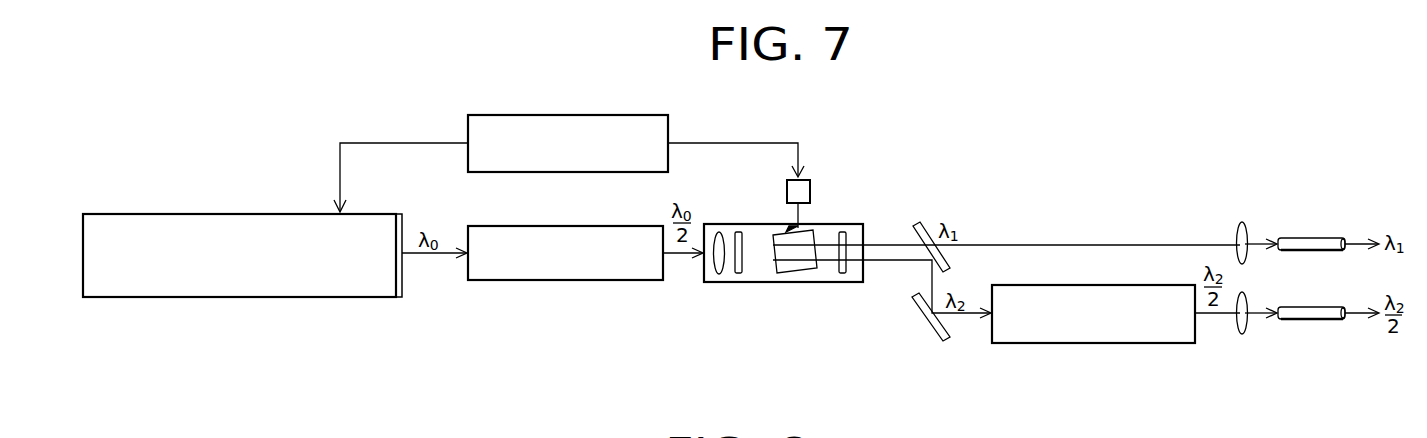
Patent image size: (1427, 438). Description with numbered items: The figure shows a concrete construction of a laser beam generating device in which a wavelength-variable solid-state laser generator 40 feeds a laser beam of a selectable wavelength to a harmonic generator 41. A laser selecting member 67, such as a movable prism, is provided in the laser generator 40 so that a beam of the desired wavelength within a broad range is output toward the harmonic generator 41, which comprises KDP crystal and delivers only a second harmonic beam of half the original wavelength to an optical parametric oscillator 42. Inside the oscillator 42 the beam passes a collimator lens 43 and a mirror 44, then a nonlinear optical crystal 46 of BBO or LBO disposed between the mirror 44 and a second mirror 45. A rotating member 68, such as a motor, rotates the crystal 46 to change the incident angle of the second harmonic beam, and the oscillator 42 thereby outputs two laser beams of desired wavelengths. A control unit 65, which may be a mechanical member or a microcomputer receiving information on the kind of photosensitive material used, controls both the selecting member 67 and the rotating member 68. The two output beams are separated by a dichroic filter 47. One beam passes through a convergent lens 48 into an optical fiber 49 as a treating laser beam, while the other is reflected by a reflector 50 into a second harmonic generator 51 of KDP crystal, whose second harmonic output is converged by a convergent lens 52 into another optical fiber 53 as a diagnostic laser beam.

The solid-state laser generator 40 is at (234, 213).
The first harmonic generator 41 is at (580, 226).
The optical parametric oscillator 42 is at (822, 223).
The collimator lens 43 is at (712, 264).
The mirror 44 is at (738, 275).
The mirror 45 is at (843, 230).
The nonlinear optical crystal 46 is at (793, 273).
The dichroic filter 47 is at (925, 223).
The convergent lens 48 is at (1240, 223).
The optical fiber 49 is at (1318, 238).
The reflector 50 is at (923, 318).
The second harmonic generator 51 is at (1052, 285).
The convergent lens 52 is at (1240, 335).
The optical fiber 53 is at (1315, 322).
The control unit 65 is at (568, 115).
The laser selecting member 67 is at (390, 298).
The rotating member 68 is at (810, 195).